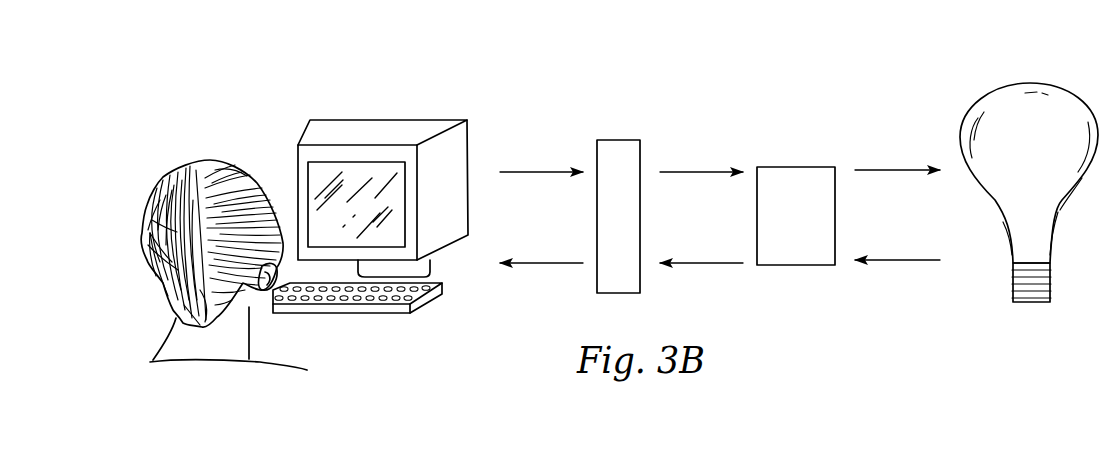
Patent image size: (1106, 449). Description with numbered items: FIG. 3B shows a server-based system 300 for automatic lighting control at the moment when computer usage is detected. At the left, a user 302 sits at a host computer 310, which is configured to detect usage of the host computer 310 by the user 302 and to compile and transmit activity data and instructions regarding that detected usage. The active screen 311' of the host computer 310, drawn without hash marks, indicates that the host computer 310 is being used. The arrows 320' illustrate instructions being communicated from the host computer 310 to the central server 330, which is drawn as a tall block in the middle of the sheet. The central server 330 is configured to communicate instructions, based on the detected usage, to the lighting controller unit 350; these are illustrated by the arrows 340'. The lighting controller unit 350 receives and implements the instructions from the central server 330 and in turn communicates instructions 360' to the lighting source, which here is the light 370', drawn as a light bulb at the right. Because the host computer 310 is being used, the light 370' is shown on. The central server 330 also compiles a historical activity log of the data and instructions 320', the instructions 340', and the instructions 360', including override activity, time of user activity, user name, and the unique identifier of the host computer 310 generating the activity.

The system 300 is at (672, 62).
The user 302 is at (133, 205).
The host computer 310 is at (395, 102).
The screen 311' is at (310, 186).
The arrows 320' is at (541, 183).
The central server 330 is at (618, 132).
The arrows 340' is at (701, 183).
The lighting controller unit 350 is at (795, 148).
The instructions 360' is at (897, 175).
The light 370' is at (1029, 157).